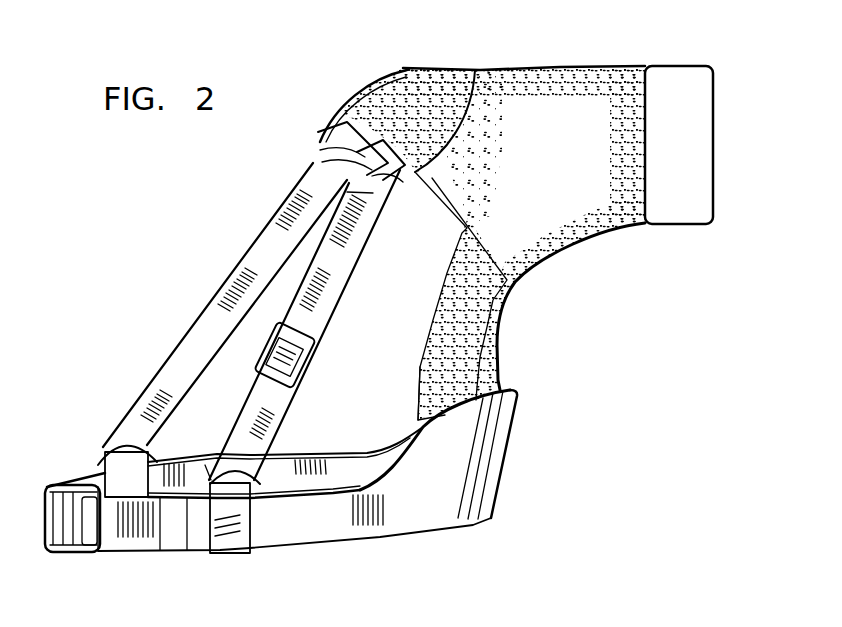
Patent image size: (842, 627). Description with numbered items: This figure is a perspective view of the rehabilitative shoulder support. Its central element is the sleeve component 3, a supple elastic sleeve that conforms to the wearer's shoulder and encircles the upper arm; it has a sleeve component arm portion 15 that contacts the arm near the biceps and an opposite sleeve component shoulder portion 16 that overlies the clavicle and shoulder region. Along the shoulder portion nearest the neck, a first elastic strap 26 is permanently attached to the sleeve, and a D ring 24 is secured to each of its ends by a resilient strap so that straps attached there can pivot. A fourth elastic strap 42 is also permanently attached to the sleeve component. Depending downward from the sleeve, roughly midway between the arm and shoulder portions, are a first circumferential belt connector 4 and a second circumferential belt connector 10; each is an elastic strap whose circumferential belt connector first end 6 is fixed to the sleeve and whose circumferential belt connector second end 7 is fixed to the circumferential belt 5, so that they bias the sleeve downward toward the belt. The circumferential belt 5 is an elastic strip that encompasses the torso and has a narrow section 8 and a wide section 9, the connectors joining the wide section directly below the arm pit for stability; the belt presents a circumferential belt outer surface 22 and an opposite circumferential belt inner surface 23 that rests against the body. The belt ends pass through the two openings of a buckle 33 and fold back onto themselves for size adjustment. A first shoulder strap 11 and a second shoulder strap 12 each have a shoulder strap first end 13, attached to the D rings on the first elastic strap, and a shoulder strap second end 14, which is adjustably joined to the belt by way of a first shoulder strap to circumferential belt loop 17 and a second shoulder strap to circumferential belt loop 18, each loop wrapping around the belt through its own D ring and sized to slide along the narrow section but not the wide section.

The sleeve component 3 is at (571, 162).
The first circumferential belt connector 4 is at (462, 318).
The circumferential belt 5 is at (317, 520).
The circumferential belt connector first end 6 is at (487, 252).
The circumferential belt connector second end 7 is at (443, 403).
The narrow section 8 is at (102, 473).
The wide section 9 is at (463, 468).
The second circumferential belt connector 10 is at (494, 352).
The first shoulder strap 11 is at (338, 278).
The second shoulder strap 12 is at (220, 312).
The shoulder strap first end 13 is at (323, 175).
The shoulder strap second end 14 is at (133, 442).
The sleeve component arm portion 15 is at (700, 95).
The sleeve component shoulder portion 16 is at (446, 74).
The first shoulder strap to circumferential belt loop 17 is at (228, 553).
The second shoulder strap to circumferential belt loop 18 is at (120, 474).
The circumferential belt outer surface 22 is at (417, 520).
The circumferential belt inner surface 23 is at (305, 460).
The D ring 24 is at (206, 465).
The first elastic strap 26 is at (439, 129).
The buckle 33 is at (80, 556).
The fourth elastic strap 42 is at (693, 162).